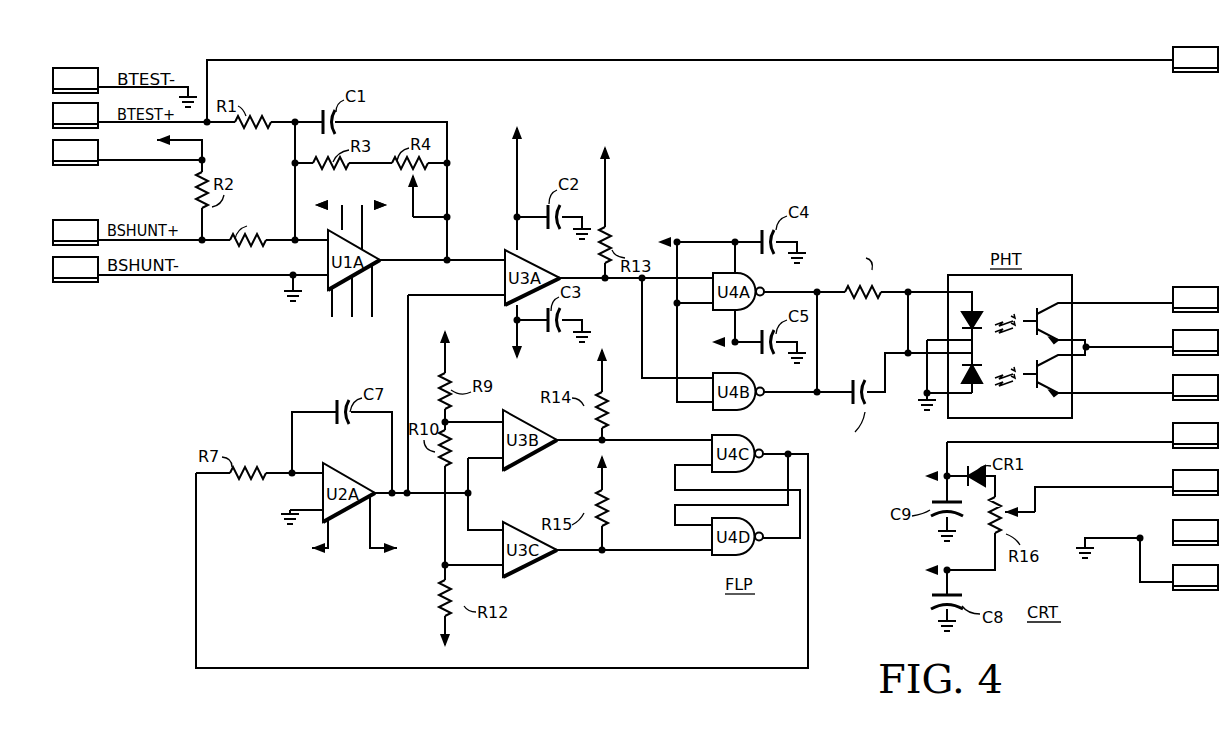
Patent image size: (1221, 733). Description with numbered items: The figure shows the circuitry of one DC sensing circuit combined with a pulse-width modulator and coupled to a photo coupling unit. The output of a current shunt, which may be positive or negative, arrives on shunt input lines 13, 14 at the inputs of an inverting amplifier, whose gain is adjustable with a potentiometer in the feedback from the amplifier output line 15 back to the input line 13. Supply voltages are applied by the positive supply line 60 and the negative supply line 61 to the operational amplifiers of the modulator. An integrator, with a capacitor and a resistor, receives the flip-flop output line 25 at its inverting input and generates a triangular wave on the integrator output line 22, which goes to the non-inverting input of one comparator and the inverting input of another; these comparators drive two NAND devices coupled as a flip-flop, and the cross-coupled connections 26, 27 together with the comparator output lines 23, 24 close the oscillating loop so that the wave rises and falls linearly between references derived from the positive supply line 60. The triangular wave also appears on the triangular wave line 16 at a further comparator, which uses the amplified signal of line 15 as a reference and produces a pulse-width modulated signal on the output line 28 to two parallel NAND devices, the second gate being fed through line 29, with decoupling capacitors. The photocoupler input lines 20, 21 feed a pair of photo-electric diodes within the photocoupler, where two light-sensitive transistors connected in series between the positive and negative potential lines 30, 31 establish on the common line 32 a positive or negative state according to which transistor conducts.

The shunt input line 13 is at (222, 242).
The shunt input line 14 is at (238, 278).
The amplifier output line 15 is at (481, 260).
The triangular wave line 16 is at (447, 294).
The photocoupler input line 20 is at (893, 292).
The photocoupler input line 21 is at (905, 357).
The integrator output line 22 is at (426, 497).
The comparator U3B output line 23 is at (683, 440).
The comparator U3C output line 24 is at (628, 553).
The flip-flop output line 25 is at (600, 665).
The flip-flop cross-coupling line 26 is at (675, 485).
The flip-flop cross-coupling line 27 is at (675, 508).
The pulse-width modulated output line 28 is at (658, 282).
The comparator U3A output line to U4B 29 is at (643, 327).
The positive potential line 30 is at (1090, 303).
The negative potential line 31 is at (1100, 393).
The common line 32 is at (1110, 347).
The positive supply line 60 is at (517, 167).
The negative supply line 61 is at (517, 332).